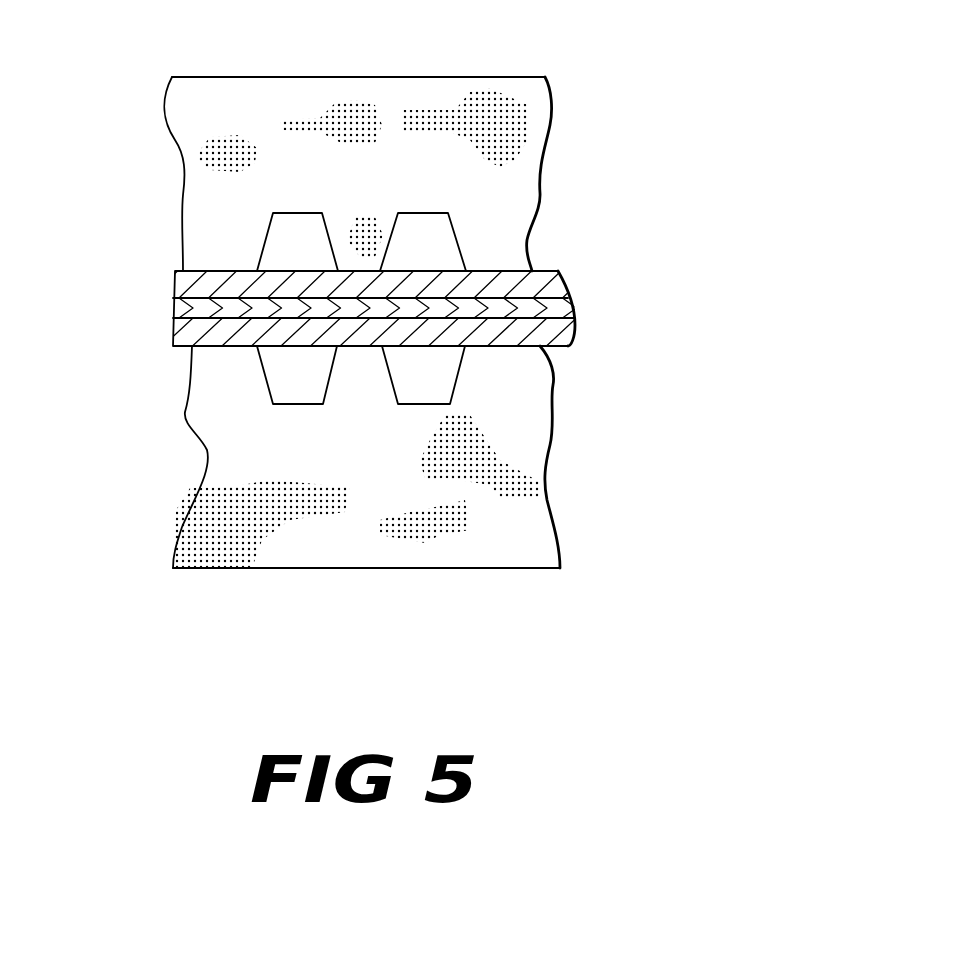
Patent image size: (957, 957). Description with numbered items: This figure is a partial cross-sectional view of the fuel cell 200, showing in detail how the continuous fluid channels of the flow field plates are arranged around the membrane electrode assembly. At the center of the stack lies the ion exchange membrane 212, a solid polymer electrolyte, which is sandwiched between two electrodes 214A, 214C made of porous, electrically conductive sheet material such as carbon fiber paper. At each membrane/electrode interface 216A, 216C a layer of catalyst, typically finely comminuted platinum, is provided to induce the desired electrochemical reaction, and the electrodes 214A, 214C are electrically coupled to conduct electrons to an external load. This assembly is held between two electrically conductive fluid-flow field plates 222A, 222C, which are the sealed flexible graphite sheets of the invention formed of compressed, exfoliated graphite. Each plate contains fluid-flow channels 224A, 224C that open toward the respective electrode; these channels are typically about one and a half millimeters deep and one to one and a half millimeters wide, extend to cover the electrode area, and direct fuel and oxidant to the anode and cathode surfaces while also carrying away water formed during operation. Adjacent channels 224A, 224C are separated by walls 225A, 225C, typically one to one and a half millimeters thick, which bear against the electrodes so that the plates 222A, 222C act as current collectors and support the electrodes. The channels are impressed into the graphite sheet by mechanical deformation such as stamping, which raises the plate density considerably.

The fuel cell 200 is at (848, 273).
The ion exchange membrane 212 is at (573, 315).
The electrode 214A is at (550, 271).
The electrode 214C is at (541, 347).
The membrane/electrode interface 216A is at (177, 298).
The membrane/electrode interface 216C is at (170, 318).
The fluid-flow field plate 222A is at (375, 77).
The fluid-flow field plate 222C is at (325, 568).
The fluid-flow channel 224A is at (433, 245).
The fluid-flow channel 224C is at (443, 383).
The wall 225A is at (373, 230).
The wall 225C is at (350, 372).